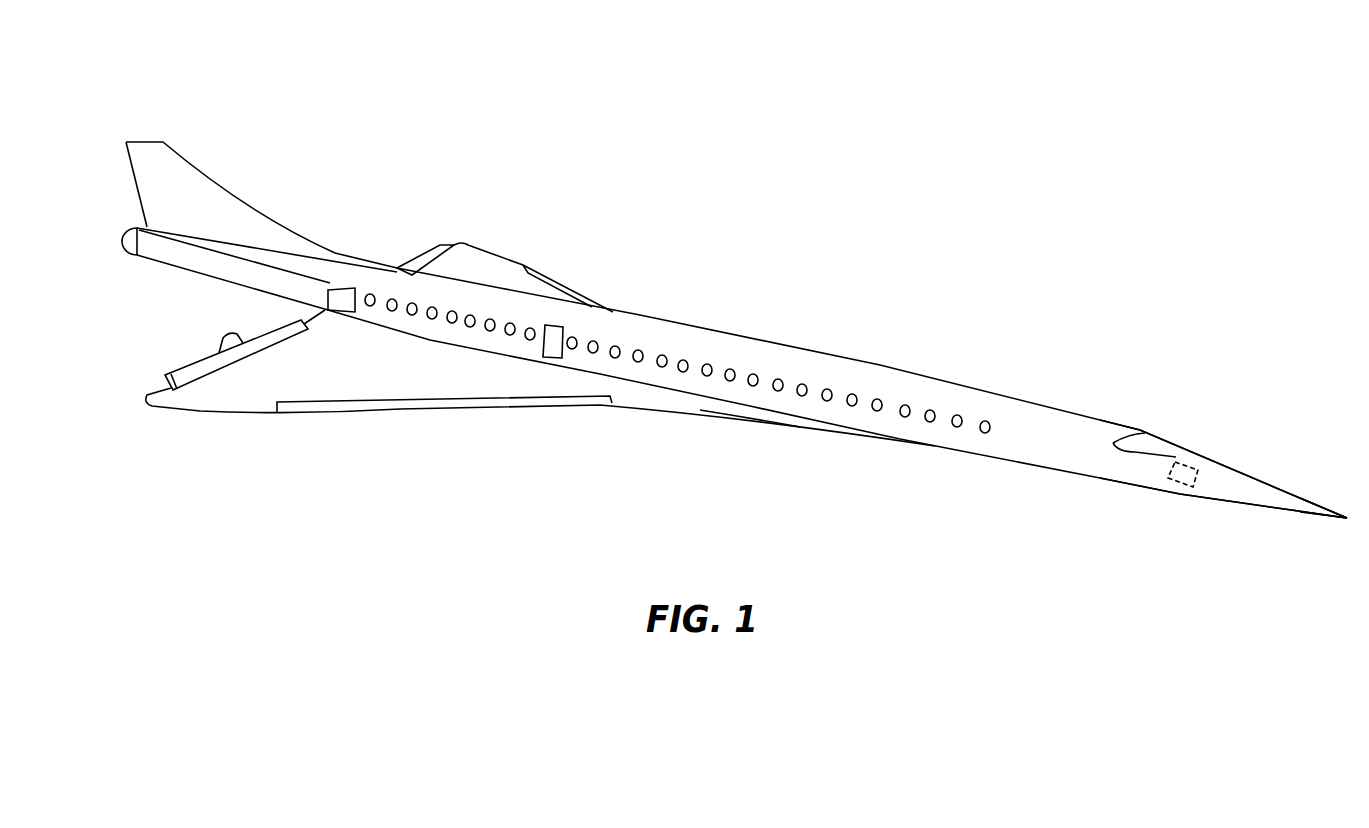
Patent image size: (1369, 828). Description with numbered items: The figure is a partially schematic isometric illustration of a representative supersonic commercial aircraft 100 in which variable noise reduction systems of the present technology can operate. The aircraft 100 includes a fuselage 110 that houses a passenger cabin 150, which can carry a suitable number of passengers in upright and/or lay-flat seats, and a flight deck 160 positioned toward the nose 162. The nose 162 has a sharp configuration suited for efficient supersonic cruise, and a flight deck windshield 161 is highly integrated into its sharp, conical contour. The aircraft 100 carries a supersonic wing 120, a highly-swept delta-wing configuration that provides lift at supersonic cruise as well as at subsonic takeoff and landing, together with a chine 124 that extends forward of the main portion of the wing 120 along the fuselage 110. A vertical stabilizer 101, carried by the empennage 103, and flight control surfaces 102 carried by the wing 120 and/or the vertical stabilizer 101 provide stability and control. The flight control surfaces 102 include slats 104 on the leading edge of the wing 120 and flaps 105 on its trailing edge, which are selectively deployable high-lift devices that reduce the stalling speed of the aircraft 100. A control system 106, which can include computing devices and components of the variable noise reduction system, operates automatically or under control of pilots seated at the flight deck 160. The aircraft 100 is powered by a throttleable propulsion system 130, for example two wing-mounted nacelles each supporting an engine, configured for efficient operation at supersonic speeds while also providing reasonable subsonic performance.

The supersonic commercial aircraft 100 is at (868, 172).
The vertical stabilizer 101 is at (238, 200).
The flight control surfaces 102 is at (258, 323).
The empennage 103 is at (337, 223).
The slats 104 is at (552, 278).
The flaps 105 is at (434, 254).
The control system 106 is at (1180, 490).
The fuselage 110 is at (823, 362).
The supersonic wing 120 is at (318, 387).
The chine 124 is at (748, 422).
The propulsion system 130 is at (258, 380).
The passenger cabin 150 is at (627, 330).
The flight deck 160 is at (1095, 457).
The flight deck windshield 161 is at (1157, 442).
The nose 162 is at (1240, 485).